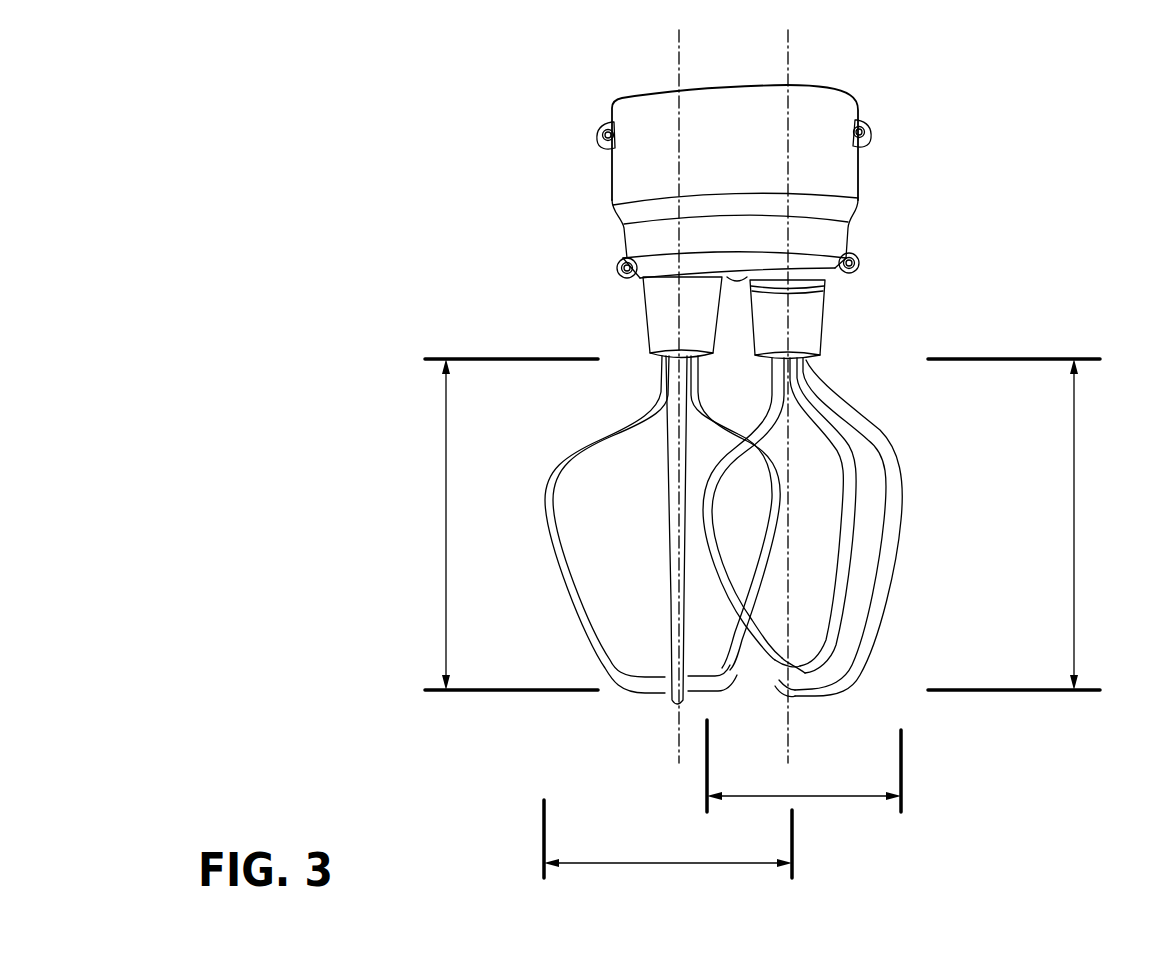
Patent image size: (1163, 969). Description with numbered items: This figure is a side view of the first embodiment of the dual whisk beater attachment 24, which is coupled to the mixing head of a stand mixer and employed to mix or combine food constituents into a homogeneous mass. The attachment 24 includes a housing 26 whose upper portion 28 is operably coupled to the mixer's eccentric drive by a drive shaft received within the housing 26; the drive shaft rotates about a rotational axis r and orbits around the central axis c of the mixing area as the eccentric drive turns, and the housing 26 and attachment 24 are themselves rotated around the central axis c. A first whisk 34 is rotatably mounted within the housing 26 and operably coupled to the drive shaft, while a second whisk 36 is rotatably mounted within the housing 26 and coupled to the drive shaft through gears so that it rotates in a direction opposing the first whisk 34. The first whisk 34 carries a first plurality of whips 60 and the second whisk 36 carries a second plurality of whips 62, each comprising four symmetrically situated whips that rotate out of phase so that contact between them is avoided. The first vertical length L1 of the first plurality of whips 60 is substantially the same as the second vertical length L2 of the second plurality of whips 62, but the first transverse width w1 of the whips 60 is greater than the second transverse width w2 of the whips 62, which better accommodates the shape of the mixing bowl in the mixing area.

The dual whisk beater attachment 24 is at (948, 133).
The housing 26 is at (817, 233).
The upper portion 28 is at (657, 112).
The first whisk 34 is at (662, 313).
The second whisk 36 is at (808, 314).
The first plurality of whips 60 is at (553, 542).
The second plurality of whips 62 is at (905, 533).
The first vertical length L1 is at (445, 523).
The second vertical length L2 is at (1075, 541).
The first transverse width w1 is at (673, 862).
The second transverse width w2 is at (799, 795).
The rotational axis r is at (677, 385).
The central axis c is at (787, 385).